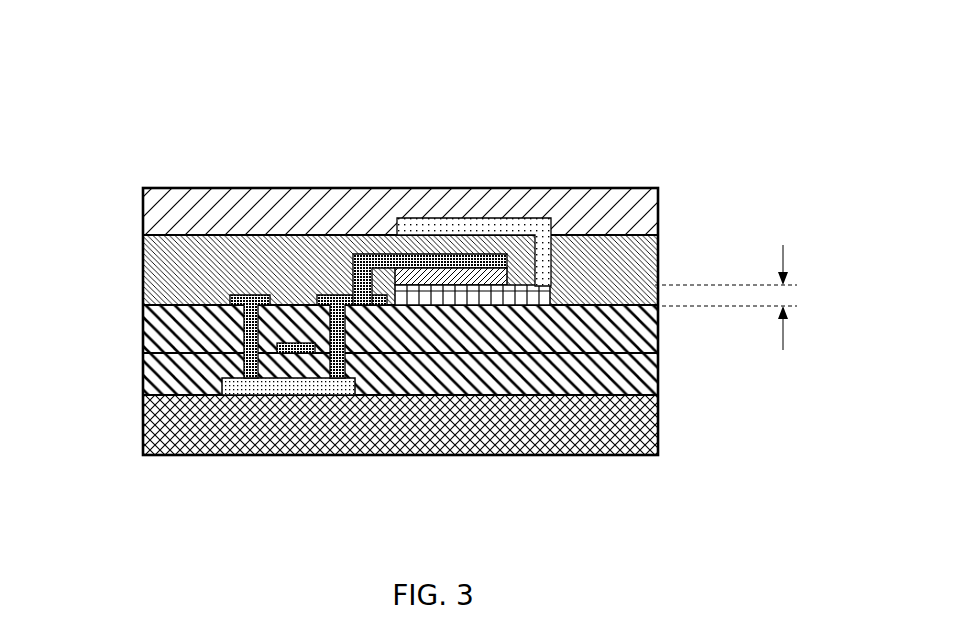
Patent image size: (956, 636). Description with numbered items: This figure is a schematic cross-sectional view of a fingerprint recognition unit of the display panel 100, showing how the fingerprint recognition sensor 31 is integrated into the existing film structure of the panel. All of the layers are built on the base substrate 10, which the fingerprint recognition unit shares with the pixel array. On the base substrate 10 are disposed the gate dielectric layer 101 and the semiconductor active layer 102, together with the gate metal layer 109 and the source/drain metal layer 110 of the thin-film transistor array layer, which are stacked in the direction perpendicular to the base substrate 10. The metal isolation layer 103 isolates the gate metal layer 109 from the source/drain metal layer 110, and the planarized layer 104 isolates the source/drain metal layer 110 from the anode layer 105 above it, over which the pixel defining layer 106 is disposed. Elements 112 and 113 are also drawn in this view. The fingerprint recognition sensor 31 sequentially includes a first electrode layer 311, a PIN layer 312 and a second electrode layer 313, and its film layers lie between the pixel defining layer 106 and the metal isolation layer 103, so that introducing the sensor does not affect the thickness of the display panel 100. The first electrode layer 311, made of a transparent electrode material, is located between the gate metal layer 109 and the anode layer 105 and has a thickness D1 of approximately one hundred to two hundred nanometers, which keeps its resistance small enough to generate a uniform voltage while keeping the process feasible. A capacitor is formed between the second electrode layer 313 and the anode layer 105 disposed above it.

The display panel 100 is at (585, 45).
The base substrate 10 is at (658, 418).
The gate dielectric layer 101 is at (658, 368).
The semiconductor active layer 102 is at (265, 455).
The metal isolation layer 103 is at (658, 327).
The planarized layer 104 is at (658, 270).
The anode layer 105 is at (551, 220).
The pixel defining layer 106 is at (658, 202).
The gate metal layer 109 is at (333, 455).
The source/drain metal layer 110 is at (326, 385).
The drain electrode 112 is at (530, 455).
The source electrode 113 is at (450, 455).
The fingerprint recognition sensor 31 is at (428, 294).
The first electrode layer 311 is at (508, 300).
The PIN layer 312 is at (436, 288).
The second electrode layer 313 is at (354, 256).
The thickness of the first electrode layer D1 is at (743, 297).